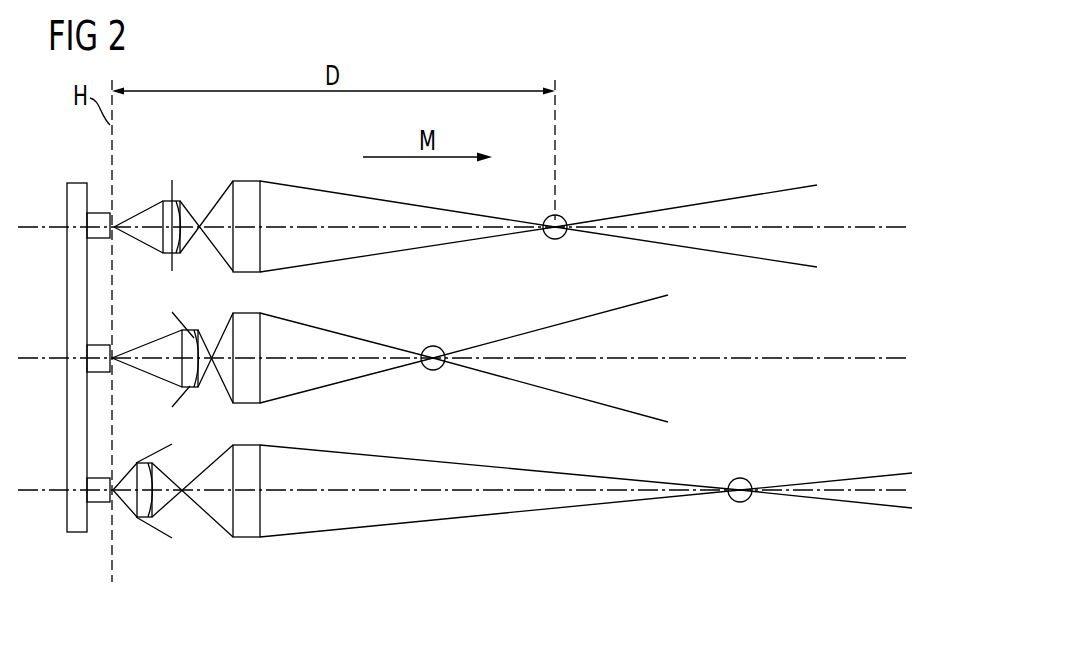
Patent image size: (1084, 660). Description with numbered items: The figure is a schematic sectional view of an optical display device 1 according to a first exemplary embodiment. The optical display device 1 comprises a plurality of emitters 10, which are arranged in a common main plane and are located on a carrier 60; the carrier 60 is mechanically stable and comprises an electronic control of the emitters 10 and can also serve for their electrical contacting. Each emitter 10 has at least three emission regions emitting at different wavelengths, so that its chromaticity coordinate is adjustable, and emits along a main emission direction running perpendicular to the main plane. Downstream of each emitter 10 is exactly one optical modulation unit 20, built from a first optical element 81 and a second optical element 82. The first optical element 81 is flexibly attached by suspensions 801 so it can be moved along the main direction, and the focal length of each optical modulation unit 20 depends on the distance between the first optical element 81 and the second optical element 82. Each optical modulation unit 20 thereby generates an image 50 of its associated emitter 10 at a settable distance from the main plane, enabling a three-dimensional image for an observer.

The optical display device 1 is at (758, 106).
The emitter 10 is at (100, 212).
The optical modulation unit 20 is at (285, 152).
The image 50 is at (564, 220).
The carrier 60 is at (74, 188).
The first optical element 81 is at (165, 240).
The second optical element 82 is at (246, 190).
The suspension 801 is at (174, 186).